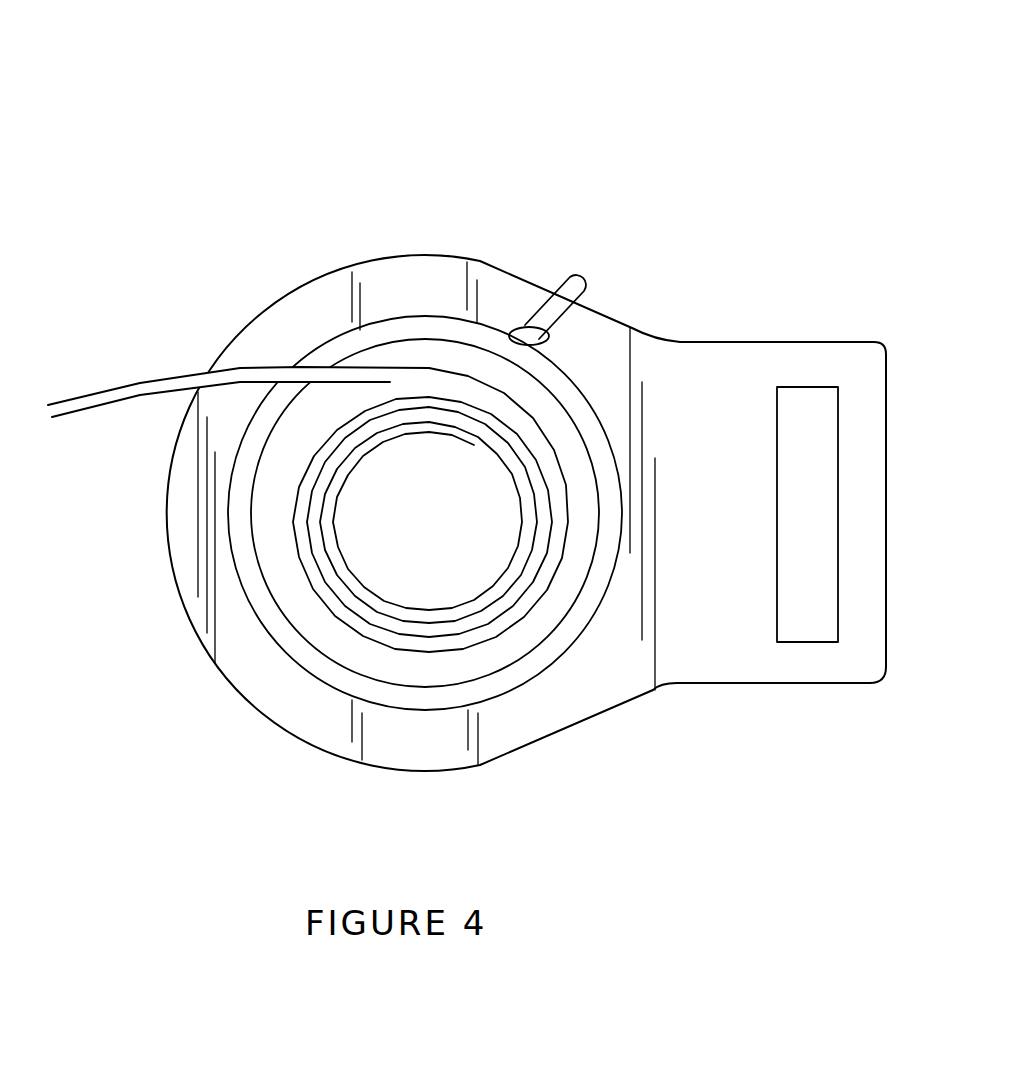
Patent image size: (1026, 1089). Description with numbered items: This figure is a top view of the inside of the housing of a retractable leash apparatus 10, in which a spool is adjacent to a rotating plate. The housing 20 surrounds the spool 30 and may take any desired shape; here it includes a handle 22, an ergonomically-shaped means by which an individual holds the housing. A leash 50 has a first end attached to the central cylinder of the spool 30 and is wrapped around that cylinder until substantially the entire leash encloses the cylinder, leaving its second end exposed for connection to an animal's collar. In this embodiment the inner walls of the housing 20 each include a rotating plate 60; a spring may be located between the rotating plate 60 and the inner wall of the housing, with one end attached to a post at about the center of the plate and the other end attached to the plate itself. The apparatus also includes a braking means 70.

The retractable leash apparatus 10 is at (55, 174).
The housing 20 is at (577, 340).
The handle 22 is at (865, 437).
The spool 30 is at (322, 632).
The leash 50 is at (332, 375).
The rotating plate 60 is at (338, 675).
The braking means 70 is at (540, 340).